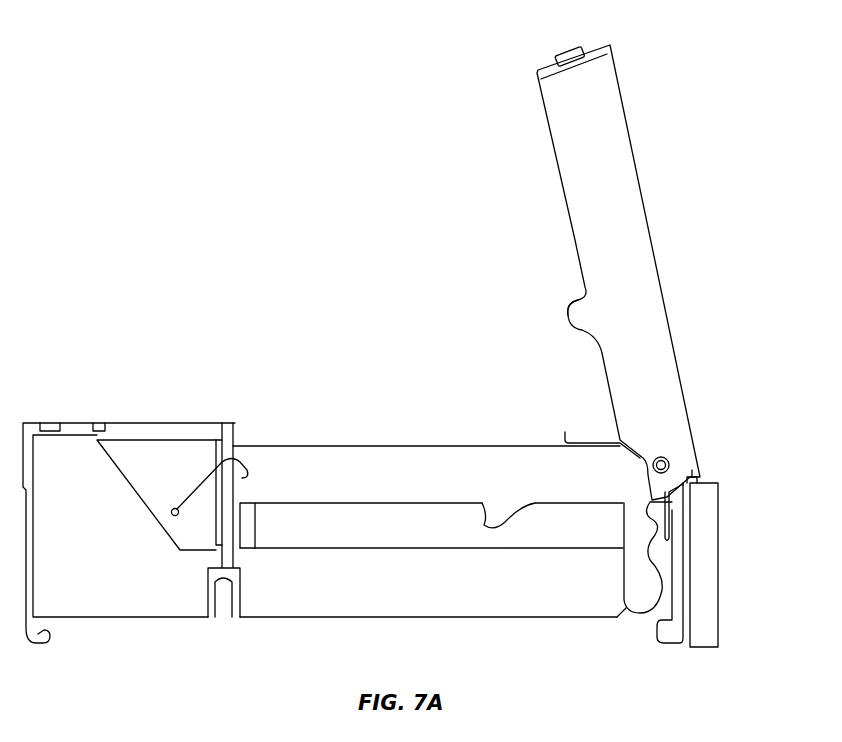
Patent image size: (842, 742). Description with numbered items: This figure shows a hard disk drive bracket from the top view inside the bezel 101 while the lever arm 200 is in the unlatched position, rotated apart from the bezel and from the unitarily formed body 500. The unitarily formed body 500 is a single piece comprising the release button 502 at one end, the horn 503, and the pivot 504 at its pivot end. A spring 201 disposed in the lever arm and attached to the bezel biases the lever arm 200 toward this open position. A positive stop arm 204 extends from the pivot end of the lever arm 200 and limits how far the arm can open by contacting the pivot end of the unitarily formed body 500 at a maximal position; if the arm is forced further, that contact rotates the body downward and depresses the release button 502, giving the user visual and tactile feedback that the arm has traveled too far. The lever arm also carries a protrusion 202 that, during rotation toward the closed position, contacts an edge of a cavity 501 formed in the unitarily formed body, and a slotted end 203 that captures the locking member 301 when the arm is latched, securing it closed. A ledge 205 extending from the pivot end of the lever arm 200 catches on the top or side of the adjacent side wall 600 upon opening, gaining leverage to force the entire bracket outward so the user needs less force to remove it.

The bezel 101 is at (140, 600).
The lever arm 200 is at (617, 133).
The spring 201 is at (618, 440).
The protrusion 202 is at (567, 310).
The slotted end 203 is at (565, 58).
The positive stop arm 204 is at (665, 500).
The ledge 205 is at (700, 482).
The locking member 301 is at (205, 475).
The unitarily formed body 500 is at (305, 545).
The cavity 501 is at (485, 523).
The release button 502 is at (145, 455).
The horn 503 is at (385, 545).
The pivot 504 is at (643, 603).
The side wall 600 is at (705, 582).